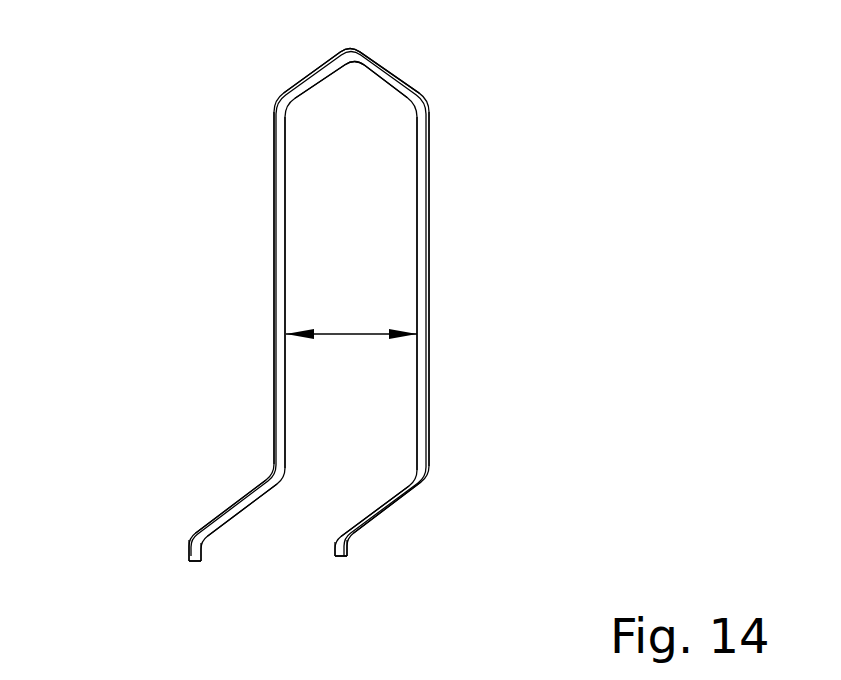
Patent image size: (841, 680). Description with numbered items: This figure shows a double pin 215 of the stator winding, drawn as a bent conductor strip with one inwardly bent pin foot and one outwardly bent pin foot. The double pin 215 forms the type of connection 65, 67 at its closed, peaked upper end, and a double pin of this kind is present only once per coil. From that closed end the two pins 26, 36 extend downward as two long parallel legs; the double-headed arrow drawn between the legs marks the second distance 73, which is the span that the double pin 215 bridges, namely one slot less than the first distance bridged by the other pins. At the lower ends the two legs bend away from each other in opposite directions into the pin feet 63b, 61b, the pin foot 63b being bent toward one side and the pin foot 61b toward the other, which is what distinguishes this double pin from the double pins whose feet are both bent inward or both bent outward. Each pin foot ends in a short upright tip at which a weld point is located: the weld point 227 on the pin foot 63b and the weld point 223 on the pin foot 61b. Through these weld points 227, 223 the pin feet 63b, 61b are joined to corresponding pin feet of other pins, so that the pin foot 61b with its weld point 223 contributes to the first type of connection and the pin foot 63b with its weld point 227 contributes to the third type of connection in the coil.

The double pin 215 is at (278, 60).
The type of connection 65 is at (353, 54).
The type of connection 67 is at (351, 79).
The pin 26 is at (277, 292).
The pin 36 is at (420, 285).
The second distance 73 is at (350, 336).
The pin foot 63b is at (236, 505).
The pin foot 61b is at (392, 510).
The weld point 227 is at (196, 549).
The weld point 223 is at (342, 547).